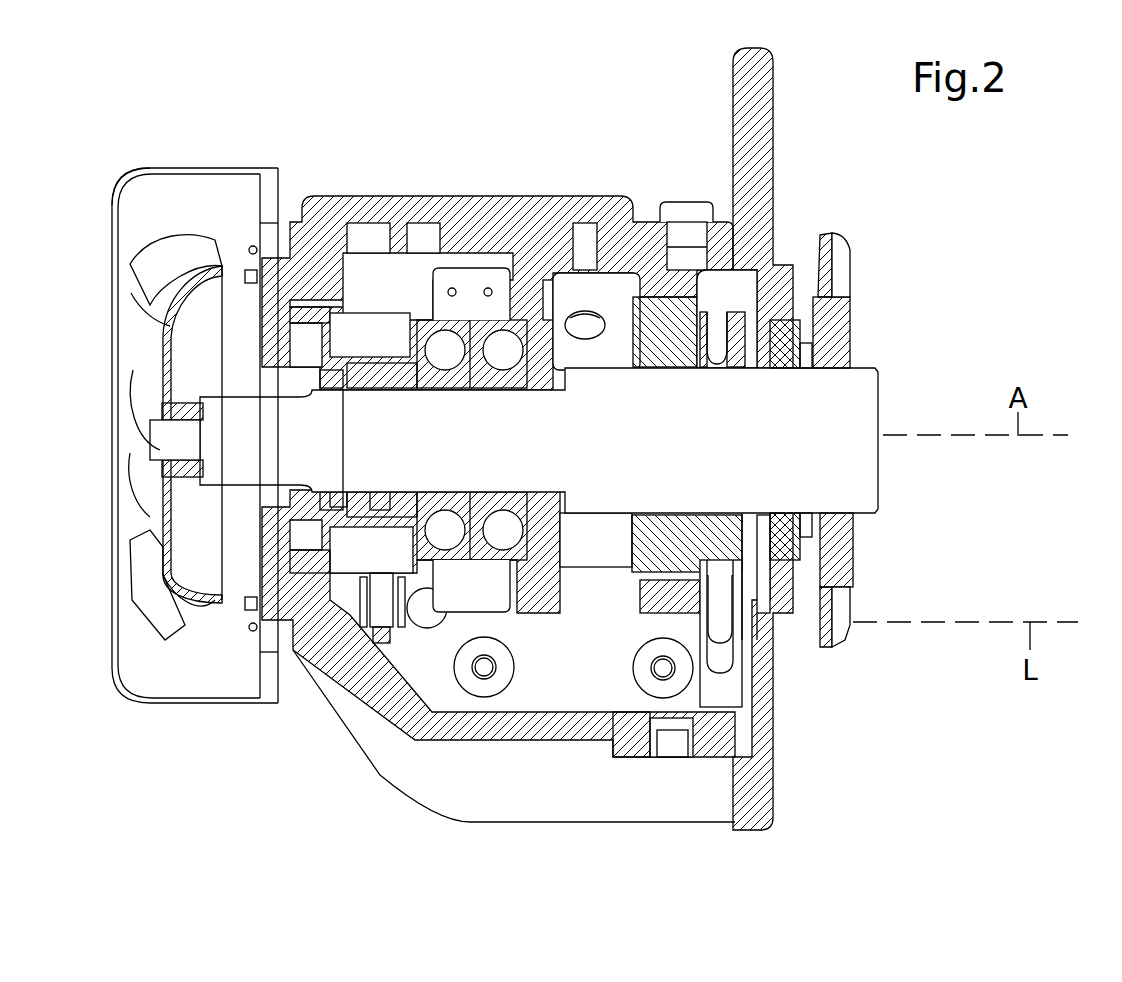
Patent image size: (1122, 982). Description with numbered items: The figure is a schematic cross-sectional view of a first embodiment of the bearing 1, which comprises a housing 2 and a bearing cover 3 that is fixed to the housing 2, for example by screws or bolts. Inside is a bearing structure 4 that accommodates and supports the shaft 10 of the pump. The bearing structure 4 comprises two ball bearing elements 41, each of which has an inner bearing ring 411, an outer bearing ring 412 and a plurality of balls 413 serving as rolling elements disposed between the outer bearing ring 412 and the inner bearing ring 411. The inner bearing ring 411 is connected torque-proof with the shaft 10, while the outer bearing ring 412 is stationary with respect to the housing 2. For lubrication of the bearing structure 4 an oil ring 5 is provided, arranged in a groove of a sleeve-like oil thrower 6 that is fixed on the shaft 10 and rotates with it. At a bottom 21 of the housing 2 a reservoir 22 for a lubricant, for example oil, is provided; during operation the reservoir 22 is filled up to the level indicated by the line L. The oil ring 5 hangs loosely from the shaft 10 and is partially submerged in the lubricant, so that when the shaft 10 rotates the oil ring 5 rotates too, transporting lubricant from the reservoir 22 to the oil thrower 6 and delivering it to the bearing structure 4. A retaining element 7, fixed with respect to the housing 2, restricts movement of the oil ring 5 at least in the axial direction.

The bearing 1 is at (150, 75).
The housing 2 is at (774, 156).
The bearing cover 3 is at (258, 576).
The bearing structure 4 is at (460, 495).
The ball bearing element 41 is at (457, 568).
The inner bearing ring 411 is at (415, 350).
The outer bearing ring 412 is at (460, 345).
The balls 413 is at (507, 528).
The oil ring 5 is at (400, 645).
The oil thrower 6 is at (352, 362).
The retaining element 7 is at (362, 603).
The shaft 10 is at (881, 364).
The bottom 21 is at (486, 727).
The reservoir 22 is at (615, 677).